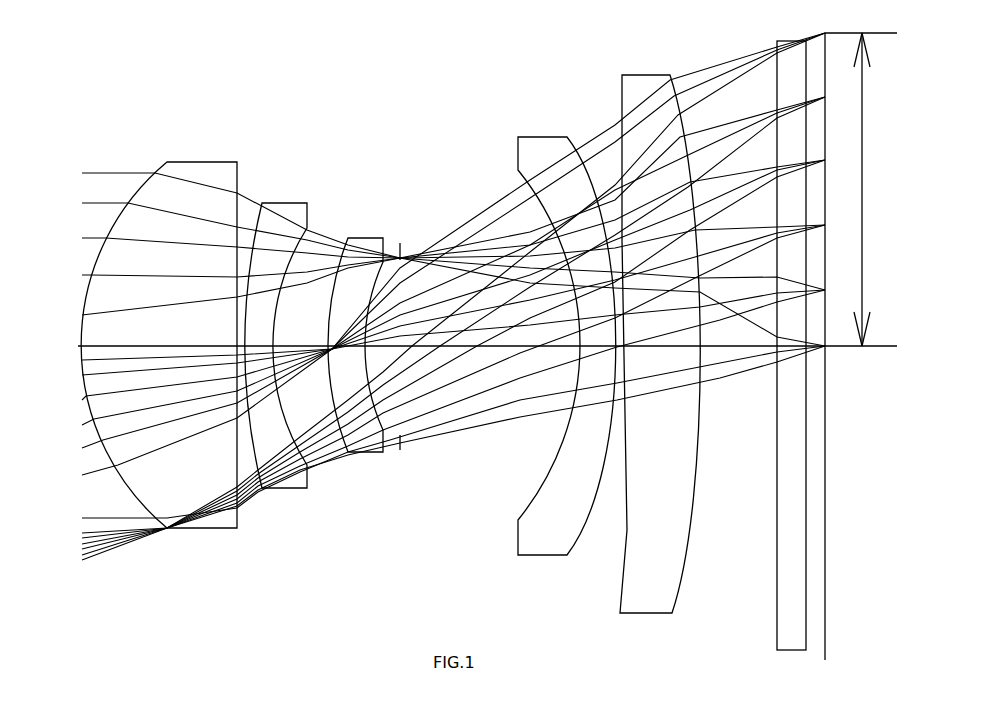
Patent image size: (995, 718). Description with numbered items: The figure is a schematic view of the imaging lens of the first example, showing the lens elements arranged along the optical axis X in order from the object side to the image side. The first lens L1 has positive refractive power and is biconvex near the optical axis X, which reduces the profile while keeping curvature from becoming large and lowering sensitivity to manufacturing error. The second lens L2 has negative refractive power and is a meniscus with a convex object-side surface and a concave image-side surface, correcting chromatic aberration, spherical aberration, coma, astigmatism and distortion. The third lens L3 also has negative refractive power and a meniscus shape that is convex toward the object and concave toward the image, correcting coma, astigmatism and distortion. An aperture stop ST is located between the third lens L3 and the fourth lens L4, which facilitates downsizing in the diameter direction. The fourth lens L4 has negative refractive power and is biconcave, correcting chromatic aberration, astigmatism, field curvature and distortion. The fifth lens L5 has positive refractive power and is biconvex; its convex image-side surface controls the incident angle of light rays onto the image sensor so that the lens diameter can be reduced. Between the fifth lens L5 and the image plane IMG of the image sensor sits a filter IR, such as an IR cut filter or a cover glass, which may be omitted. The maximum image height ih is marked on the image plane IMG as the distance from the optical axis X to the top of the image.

The first lens L1 is at (223, 161).
The second lens L2 is at (300, 202).
The third lens L3 is at (370, 237).
The fourth lens L4 is at (535, 134).
The fifth lens L5 is at (647, 74).
The aperture stop ST is at (400, 450).
The filter IR is at (777, 42).
The image plane IMG is at (824, 643).
The optical axis X is at (127, 344).
The maximum image height ih is at (862, 189).